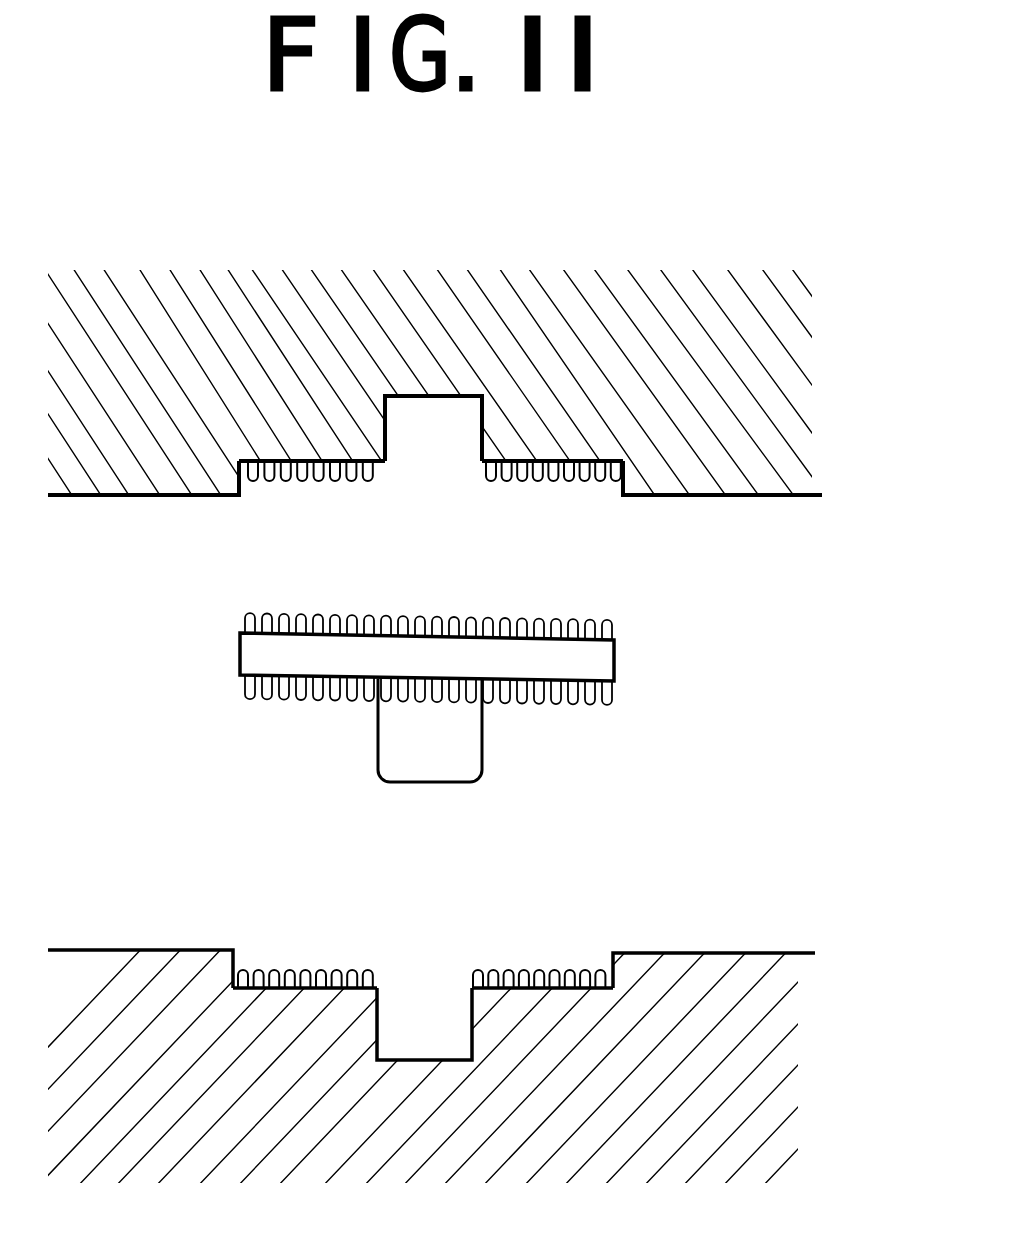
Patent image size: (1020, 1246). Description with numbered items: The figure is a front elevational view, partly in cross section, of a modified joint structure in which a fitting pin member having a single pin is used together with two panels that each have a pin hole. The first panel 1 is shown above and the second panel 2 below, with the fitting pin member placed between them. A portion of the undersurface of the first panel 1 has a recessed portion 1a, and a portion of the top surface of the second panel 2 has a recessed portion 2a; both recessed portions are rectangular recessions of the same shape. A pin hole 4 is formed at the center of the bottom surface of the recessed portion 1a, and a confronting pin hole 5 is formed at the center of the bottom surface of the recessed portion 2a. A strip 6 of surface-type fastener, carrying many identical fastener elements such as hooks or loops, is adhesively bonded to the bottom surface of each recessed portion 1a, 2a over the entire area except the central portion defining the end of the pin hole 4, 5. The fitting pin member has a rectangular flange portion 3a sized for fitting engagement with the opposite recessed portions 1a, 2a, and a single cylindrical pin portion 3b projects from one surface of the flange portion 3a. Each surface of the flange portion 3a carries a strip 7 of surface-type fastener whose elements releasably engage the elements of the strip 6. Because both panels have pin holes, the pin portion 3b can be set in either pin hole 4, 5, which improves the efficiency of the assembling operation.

The first panel 1 is at (763, 390).
The recessed portion 1a is at (572, 498).
The second panel 2 is at (706, 1010).
The recessed portion 2a is at (274, 962).
The flange portion 3a is at (590, 663).
The pin portion 3b is at (450, 745).
The pin hole 4 is at (418, 427).
The pin hole 5 is at (426, 1000).
The strip 6 is at (290, 482).
The strip 7 is at (480, 625).